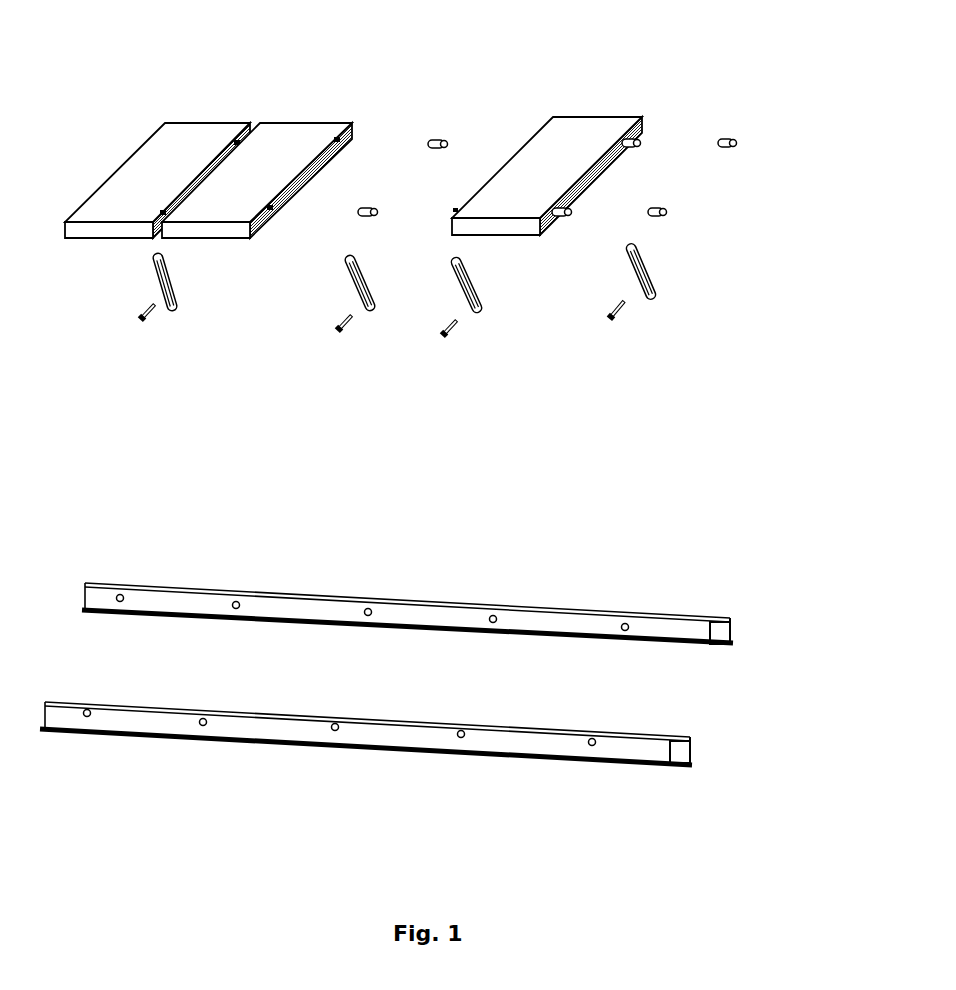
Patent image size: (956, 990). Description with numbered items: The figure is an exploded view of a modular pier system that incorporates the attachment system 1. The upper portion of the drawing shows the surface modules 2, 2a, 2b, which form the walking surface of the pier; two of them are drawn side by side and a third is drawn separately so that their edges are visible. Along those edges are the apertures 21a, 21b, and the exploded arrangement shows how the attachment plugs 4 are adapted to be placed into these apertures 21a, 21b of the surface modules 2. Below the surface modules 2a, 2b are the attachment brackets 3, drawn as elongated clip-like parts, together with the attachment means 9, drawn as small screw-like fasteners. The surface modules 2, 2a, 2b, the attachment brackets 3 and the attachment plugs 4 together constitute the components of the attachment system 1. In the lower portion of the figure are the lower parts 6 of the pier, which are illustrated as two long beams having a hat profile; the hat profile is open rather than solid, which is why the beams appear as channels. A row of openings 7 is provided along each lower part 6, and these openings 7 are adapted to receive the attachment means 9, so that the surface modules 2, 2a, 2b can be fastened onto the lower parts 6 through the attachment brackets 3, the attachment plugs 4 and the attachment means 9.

The attachment system 1 is at (419, 444).
The surface modules 2 is at (175, 137).
The surface module 2a is at (274, 185).
The surface module 2b is at (499, 136).
The aperture 21a is at (270, 209).
The aperture 21b is at (458, 211).
The attachment bracket 3 is at (373, 313).
The attachment plug 4 is at (437, 137).
The lower part 6 is at (410, 658).
The opening 7 is at (368, 616).
The attachment means 9 is at (613, 327).